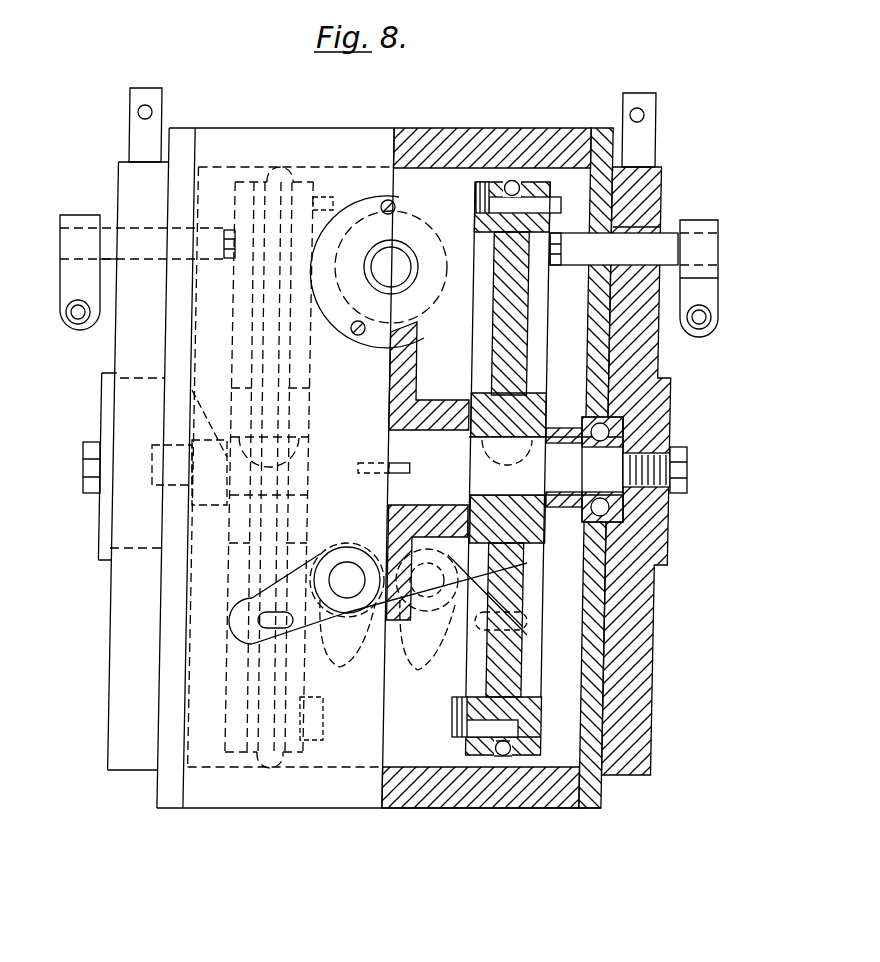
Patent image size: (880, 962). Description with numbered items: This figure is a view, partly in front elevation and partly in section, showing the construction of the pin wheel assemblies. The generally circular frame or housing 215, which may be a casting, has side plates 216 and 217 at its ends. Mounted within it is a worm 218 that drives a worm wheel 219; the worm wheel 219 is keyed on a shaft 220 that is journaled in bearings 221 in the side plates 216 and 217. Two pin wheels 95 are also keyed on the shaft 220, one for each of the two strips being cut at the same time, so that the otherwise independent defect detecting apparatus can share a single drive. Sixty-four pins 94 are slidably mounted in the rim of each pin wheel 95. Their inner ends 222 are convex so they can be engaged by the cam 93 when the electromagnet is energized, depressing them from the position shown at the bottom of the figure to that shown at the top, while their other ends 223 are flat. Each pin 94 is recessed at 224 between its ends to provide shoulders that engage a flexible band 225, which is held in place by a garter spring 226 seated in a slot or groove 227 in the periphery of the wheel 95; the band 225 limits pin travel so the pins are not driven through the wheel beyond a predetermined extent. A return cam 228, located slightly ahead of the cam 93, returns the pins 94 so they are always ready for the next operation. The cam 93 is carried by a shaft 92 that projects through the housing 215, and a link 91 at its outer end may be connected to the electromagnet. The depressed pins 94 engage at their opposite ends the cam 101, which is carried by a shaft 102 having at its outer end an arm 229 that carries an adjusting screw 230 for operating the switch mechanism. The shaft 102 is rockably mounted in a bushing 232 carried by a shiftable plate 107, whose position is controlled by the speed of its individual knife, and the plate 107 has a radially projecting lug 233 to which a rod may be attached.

The link 91 is at (378, 616).
The shaft 92 is at (349, 592).
The cam 93 is at (402, 673).
The pins 94 is at (327, 201).
The pin wheel 95 is at (492, 256).
The cam 101 is at (567, 253).
The shaft 102 is at (109, 232).
The shiftable plate 107 is at (654, 353).
The housing 215 is at (470, 130).
The side plate 216 is at (163, 796).
The side plate 217 is at (597, 794).
The worm 218 is at (402, 223).
The worm wheel 219 is at (410, 341).
The shaft 220 is at (417, 436).
The bearings 221 is at (628, 507).
The inner ends 222 is at (474, 205).
The other ends 223 is at (557, 212).
The recess 224 is at (515, 755).
The flexible band 225 is at (497, 758).
The garter spring 226 is at (513, 180).
The slot or groove 227 is at (505, 762).
The return cam 228 is at (198, 506).
The arm 229 is at (706, 290).
The adjusting screw 230 is at (714, 316).
The bushing 232 is at (661, 208).
The lug 233 is at (137, 104).